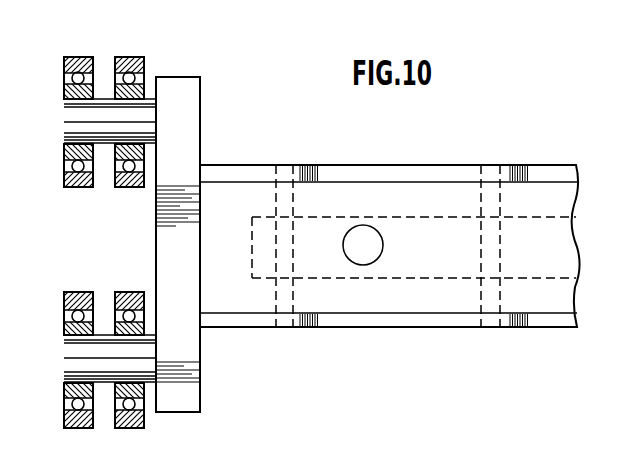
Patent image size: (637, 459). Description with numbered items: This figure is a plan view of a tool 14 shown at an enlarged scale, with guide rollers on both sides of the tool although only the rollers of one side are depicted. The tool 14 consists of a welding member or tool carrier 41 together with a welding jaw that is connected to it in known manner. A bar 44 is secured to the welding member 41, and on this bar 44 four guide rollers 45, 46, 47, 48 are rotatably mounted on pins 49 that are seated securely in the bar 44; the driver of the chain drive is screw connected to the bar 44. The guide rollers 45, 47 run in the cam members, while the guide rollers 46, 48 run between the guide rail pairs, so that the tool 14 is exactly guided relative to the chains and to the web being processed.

The tool 14 is at (390, 203).
The welding member or tool carrier 41 is at (257, 173).
The bar 44 is at (188, 358).
The guide roller 45 is at (77, 57).
The guide roller 46 is at (130, 57).
The guide roller 47 is at (70, 292).
The guide roller 48 is at (124, 292).
The pin 49 is at (74, 121).